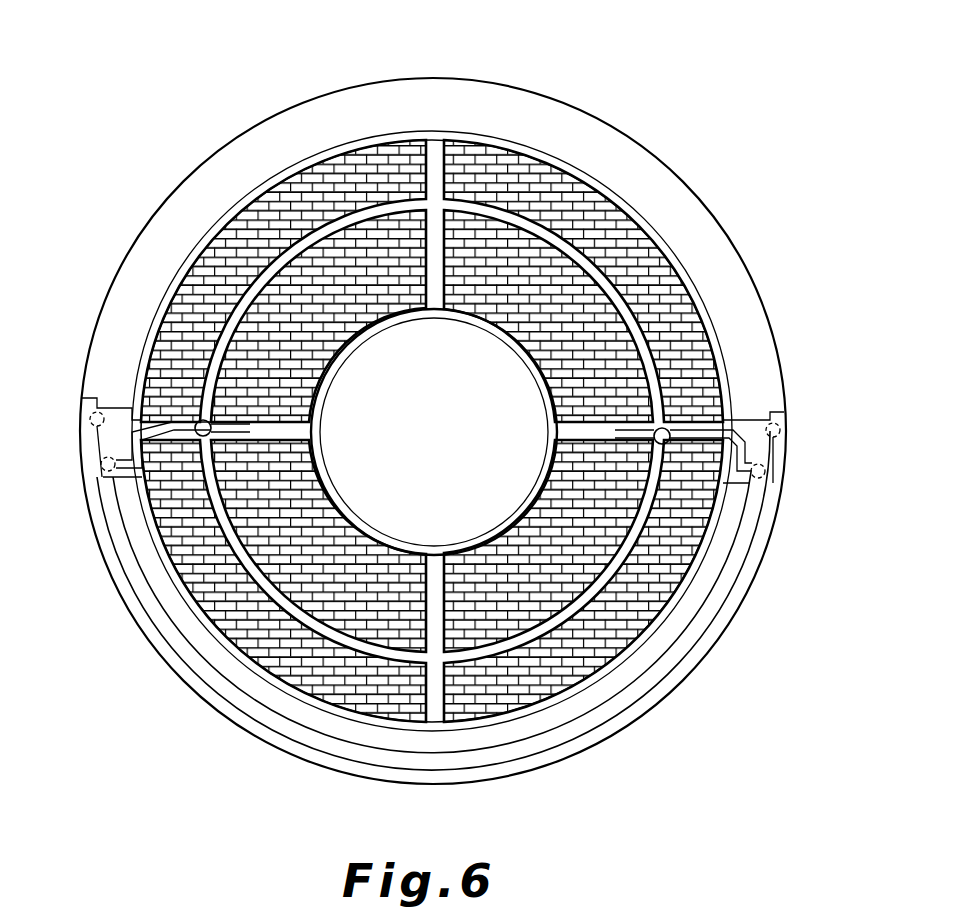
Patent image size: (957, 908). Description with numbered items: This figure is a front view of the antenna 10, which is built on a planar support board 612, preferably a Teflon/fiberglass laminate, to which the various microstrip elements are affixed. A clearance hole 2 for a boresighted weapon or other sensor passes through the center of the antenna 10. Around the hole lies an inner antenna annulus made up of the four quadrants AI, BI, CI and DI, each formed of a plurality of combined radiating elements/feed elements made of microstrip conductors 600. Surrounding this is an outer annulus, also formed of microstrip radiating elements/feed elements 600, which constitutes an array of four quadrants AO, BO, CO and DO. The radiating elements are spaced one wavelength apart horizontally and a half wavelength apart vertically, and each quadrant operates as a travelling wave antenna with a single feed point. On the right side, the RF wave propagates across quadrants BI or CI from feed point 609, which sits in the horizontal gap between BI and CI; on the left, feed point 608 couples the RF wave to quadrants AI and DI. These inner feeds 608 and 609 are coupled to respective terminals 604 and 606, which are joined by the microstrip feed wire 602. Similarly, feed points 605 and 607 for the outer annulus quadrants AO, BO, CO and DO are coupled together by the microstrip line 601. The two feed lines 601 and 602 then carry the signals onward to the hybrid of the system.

The antenna 10 is at (130, 147).
The clearance hole 2 is at (441, 481).
The microstrip conductors 600 is at (660, 302).
The microstrip line 601 is at (722, 580).
The microstrip feed wire 602 is at (714, 627).
The terminal 604 is at (780, 428).
The feed point 605 is at (766, 475).
The terminal 606 is at (90, 419).
The feed point 607 is at (104, 470).
The feed point 608 is at (198, 425).
The feed point 609 is at (668, 430).
The planar support board 612 is at (704, 196).
The outer annulus quadrant AO is at (327, 160).
The inner annulus quadrant AI is at (293, 257).
The outer annulus quadrant BO is at (549, 155).
The inner annulus quadrant BI is at (555, 240).
The outer annulus quadrant CO is at (608, 655).
The inner annulus quadrant CI is at (527, 622).
The outer annulus quadrant DO is at (250, 648).
The inner annulus quadrant DI is at (325, 618).